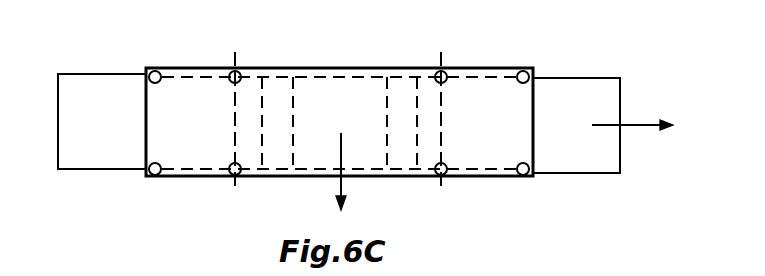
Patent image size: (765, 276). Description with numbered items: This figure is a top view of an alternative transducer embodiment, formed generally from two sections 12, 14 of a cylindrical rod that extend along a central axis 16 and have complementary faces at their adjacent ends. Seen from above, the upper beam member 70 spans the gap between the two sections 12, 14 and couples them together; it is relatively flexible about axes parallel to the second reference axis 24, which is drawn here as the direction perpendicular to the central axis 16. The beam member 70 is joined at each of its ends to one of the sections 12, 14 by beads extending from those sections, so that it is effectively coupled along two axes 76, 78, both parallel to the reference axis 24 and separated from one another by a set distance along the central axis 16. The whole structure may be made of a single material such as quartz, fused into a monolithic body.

The section of cylindrical rod 12 is at (76, 87).
The section of cylindrical rod 14 is at (548, 90).
The central axis 16 is at (664, 120).
The second reference axis 24 is at (345, 185).
The upper beam member 70 is at (366, 68).
The coupling axis 76 is at (235, 53).
The coupling axis 78 is at (441, 58).